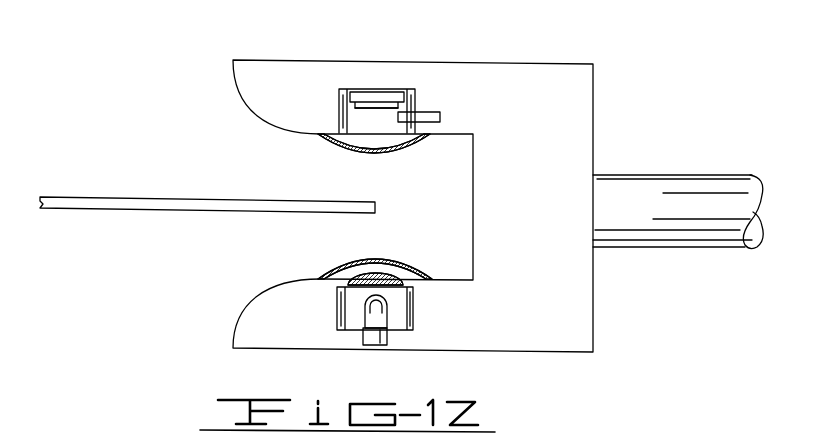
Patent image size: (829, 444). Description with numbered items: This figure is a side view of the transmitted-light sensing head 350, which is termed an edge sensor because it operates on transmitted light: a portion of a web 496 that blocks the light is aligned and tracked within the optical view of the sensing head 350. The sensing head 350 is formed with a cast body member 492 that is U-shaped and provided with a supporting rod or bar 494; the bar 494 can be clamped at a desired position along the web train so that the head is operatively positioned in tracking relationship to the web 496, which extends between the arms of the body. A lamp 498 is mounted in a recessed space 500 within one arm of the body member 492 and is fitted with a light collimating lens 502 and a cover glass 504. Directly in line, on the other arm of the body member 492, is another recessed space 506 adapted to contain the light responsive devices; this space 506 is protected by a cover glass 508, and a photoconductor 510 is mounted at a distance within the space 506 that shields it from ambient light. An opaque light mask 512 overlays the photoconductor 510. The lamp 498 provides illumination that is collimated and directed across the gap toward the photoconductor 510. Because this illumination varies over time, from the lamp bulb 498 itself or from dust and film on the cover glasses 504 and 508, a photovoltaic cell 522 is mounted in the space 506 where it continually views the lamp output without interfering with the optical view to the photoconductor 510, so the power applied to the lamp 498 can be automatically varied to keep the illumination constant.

The sensing head 350 is at (312, 40).
The cast body member 492 is at (489, 72).
The supporting rod or bar 494 is at (653, 188).
The web 496 is at (86, 202).
The lamp 498 is at (377, 317).
The recessed space 500 is at (402, 302).
The light collimating lens 502 is at (348, 280).
The cover glass 504 is at (363, 260).
The recessed space 506 is at (415, 102).
The cover glass 508 is at (388, 153).
The photoconductor 510 is at (378, 96).
The opaque light mask 512 is at (364, 106).
The photovoltaic cell 522 is at (442, 117).